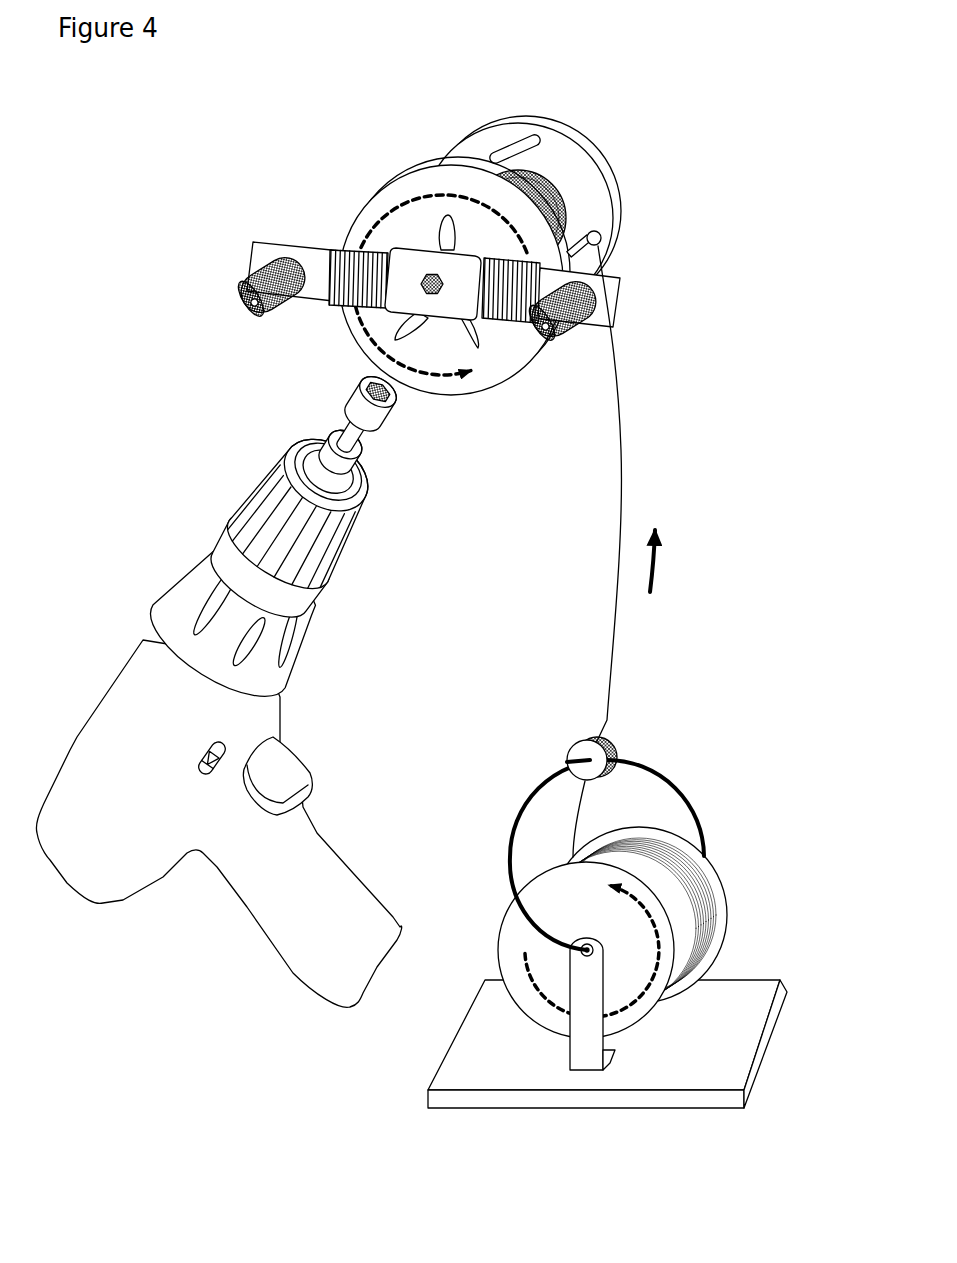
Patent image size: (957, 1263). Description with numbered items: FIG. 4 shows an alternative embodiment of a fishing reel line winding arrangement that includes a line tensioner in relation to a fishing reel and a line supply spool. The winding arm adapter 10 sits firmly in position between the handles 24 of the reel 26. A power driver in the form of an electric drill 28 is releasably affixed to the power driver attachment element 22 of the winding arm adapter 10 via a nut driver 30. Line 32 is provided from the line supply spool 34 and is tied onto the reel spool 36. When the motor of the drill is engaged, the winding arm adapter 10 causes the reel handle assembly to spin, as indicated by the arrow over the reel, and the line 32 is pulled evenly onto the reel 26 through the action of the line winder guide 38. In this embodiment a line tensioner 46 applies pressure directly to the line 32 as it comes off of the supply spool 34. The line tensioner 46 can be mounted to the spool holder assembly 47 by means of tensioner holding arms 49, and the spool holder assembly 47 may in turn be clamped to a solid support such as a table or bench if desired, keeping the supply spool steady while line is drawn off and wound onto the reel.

The winding arm adapter 10 is at (318, 230).
The power driver attachment element 22 is at (430, 288).
The handles 24 is at (257, 277).
The reel 26 is at (506, 234).
The electric drill 28 is at (198, 510).
The nut driver 30 is at (380, 423).
The line 32 is at (620, 452).
The line supply spool 34 is at (497, 896).
The reel spool 36 is at (570, 197).
The line winder guide 38 is at (602, 240).
The line tensioner 46 is at (634, 738).
The spool holder assembly 47 is at (423, 1027).
The tensioner holding arms 49 is at (533, 783).